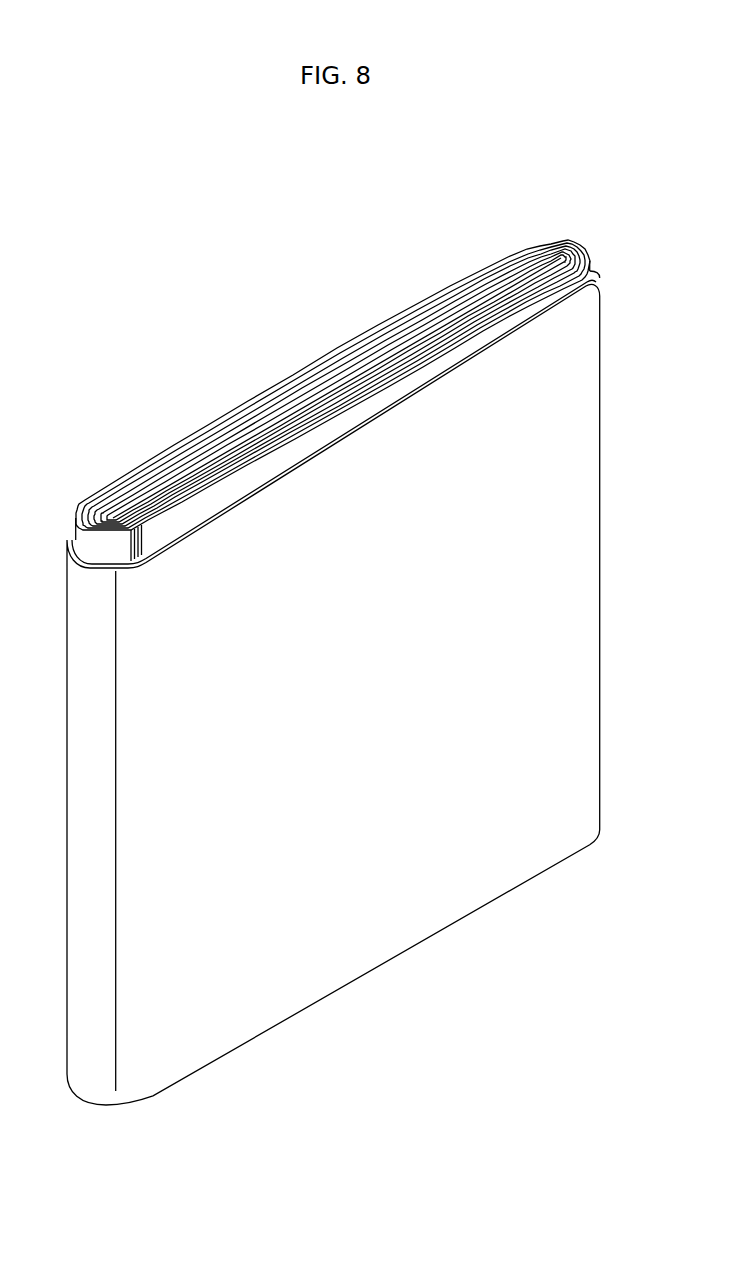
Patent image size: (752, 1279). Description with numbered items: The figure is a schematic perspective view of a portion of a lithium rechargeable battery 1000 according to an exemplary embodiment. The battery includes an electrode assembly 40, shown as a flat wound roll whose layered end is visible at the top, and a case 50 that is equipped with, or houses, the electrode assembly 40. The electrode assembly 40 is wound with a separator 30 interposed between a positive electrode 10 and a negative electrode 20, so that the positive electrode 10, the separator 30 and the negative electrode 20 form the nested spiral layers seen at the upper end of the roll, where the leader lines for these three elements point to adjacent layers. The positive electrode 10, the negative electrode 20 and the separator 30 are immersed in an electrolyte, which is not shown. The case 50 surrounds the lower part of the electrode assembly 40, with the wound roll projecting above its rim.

The lithium rechargeable battery 1000 is at (332, 150).
The positive electrode 10 is at (584, 255).
The negative electrode 20 is at (565, 241).
The separator 30 is at (579, 244).
The electrode assembly 40 is at (281, 347).
The case 50 is at (573, 537).